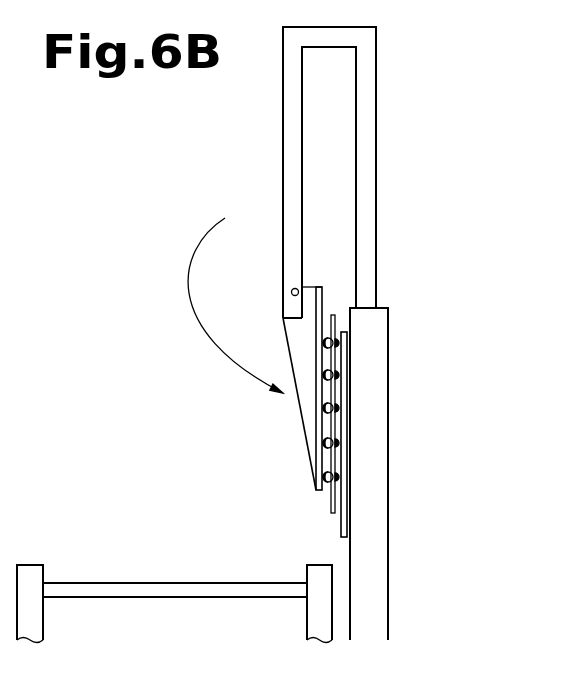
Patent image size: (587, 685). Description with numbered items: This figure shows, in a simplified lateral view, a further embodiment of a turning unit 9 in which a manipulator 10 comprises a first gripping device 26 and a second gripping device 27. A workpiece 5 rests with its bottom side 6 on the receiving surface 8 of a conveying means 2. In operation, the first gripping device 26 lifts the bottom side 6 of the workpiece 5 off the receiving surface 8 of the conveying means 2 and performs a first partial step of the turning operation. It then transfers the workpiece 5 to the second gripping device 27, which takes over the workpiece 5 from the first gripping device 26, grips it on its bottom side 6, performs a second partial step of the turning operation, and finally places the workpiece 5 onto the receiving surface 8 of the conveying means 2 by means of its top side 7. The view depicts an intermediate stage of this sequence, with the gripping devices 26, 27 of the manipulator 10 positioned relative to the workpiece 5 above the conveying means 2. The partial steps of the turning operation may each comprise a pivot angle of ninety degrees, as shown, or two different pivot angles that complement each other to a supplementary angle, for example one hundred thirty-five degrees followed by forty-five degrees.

The conveying means 2 is at (63, 457).
The workpiece 5 is at (333, 357).
The bottom side 6 is at (332, 393).
The top side 7 is at (327, 425).
The receiving surface 8 is at (63, 583).
The turning unit 9 is at (140, 205).
The manipulator 10 is at (268, 94).
The first gripping device 26 is at (255, 337).
The second gripping device 27 is at (342, 310).